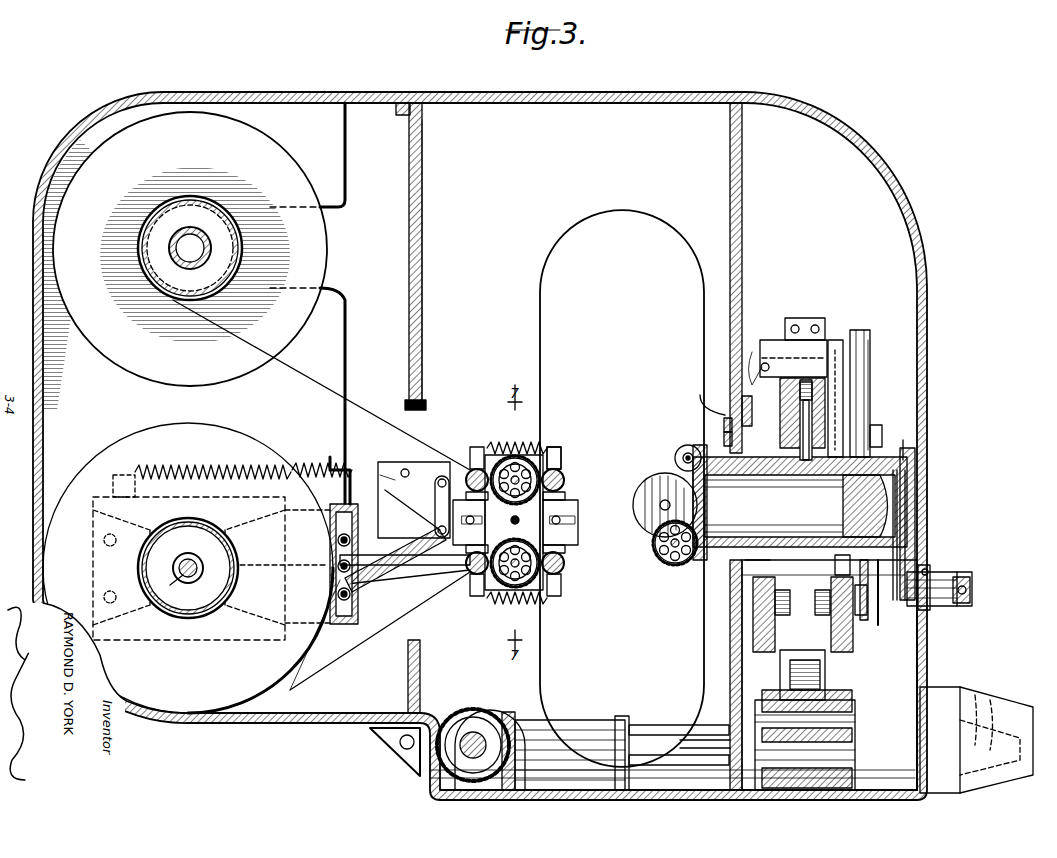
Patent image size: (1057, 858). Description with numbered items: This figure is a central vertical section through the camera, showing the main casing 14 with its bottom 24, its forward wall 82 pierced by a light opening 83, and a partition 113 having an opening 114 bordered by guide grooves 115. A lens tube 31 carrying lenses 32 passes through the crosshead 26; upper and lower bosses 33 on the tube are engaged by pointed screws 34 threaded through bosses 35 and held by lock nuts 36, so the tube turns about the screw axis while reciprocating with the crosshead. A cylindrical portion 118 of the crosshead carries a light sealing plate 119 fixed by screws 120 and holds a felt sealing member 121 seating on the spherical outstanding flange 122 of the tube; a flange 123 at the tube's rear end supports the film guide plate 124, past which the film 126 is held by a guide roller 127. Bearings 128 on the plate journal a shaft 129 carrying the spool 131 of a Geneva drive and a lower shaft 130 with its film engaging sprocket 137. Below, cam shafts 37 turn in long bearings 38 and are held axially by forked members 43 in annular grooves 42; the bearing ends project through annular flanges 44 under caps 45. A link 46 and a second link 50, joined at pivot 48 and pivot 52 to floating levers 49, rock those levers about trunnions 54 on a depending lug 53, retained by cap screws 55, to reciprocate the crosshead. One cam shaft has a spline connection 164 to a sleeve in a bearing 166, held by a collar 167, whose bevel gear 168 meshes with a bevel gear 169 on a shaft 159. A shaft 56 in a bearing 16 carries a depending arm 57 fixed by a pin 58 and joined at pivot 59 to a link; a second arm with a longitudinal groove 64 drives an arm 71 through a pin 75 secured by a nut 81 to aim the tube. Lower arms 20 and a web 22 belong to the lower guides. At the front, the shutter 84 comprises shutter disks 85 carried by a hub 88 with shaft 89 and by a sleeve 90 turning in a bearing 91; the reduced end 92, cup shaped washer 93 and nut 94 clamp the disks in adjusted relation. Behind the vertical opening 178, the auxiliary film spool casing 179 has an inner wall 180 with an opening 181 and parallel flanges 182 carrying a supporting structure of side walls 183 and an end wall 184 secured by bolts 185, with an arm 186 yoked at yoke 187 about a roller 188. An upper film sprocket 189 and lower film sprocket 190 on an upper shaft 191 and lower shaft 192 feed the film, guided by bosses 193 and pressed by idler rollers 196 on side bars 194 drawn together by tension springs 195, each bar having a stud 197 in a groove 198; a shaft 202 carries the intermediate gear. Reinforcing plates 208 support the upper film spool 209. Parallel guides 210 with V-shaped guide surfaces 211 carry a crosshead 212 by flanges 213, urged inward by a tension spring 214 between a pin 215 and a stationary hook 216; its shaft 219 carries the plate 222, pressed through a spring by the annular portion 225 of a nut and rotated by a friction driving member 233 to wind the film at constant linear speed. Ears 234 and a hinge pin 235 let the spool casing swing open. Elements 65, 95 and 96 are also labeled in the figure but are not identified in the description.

The casing 14 is at (860, 148).
The block 16 is at (815, 345).
The piston chamber 20 is at (780, 680).
The piston 22 is at (822, 680).
The drive shaft 24 is at (684, 792).
The bar 26 is at (812, 420).
The cylinder wall 31 is at (820, 480).
The piston 32 is at (712, 500).
The cylinder 33 is at (785, 480).
The stem 34 is at (812, 425).
The body 35 is at (780, 398).
The threaded stem 36 is at (814, 390).
The tube 37 is at (700, 738).
The housing 38 is at (855, 720).
The nozzle tip 42 is at (1005, 730).
The nozzle passage 43 is at (980, 698).
The nozzle 44 is at (925, 687).
The nozzle passage 45 is at (988, 705).
The disc 46 is at (855, 740).
The disc 48 is at (855, 760).
The cylinder 49 is at (753, 640).
The plate 50 is at (852, 700).
The housing 52 is at (740, 710).
The spring 53 is at (775, 620).
The lever 54 is at (843, 575).
The spring 55 is at (753, 600).
The ears 56 is at (778, 318).
The stop 57 is at (742, 400).
The pin 58 is at (756, 362).
The bracket 59 is at (862, 585).
The rod 64 is at (863, 330).
The member 65 is at (930, 470).
The rod 71 is at (870, 360).
The lug 75 is at (882, 446).
The plate 81 is at (915, 425).
The plate 82 is at (910, 386).
The plate 83 is at (915, 515).
The plate 84 is at (900, 500).
The plate 85 is at (920, 530).
The boss 88 is at (920, 640).
The gear 89 is at (930, 565).
The shaft 90 is at (938, 608).
The pin 91 is at (940, 568).
The nut 92 is at (970, 583).
The washer 93 is at (965, 606).
The collar 94 is at (968, 572).
The rod 95 is at (866, 620).
The rod 96 is at (882, 628).
The partition 113 is at (742, 186).
The bracket 114 is at (724, 424).
The arm 115 is at (716, 396).
The block 118 is at (766, 440).
The rod 119 is at (738, 480).
The gear 120 is at (720, 580).
The flange 121 is at (755, 540).
The gear 122 is at (700, 560).
The bracket 123 is at (724, 438).
The gear 124 is at (678, 470).
The opening 126 is at (704, 305).
The pinion 127 is at (676, 450).
The disc 128 is at (660, 495).
The hub 129 is at (658, 545).
The gear 130 is at (655, 560).
The shaft 131 is at (640, 495).
The gear 137 is at (670, 566).
The gear 159 is at (468, 730).
The shaft 164 is at (665, 730).
The sleeve 166 is at (592, 722).
The collar 167 is at (630, 720).
The worm 168 is at (508, 712).
The gear teeth 169 is at (470, 710).
The partition top 178 is at (405, 92).
The casing top 179 is at (290, 92).
The partition 180 is at (424, 190).
The partition face 181 is at (420, 395).
The partition lower 182 is at (425, 450).
The frame 183 is at (560, 495).
The link 184 is at (435, 498).
The pivot 185 is at (438, 484).
The lever 186 is at (386, 562).
The pin 187 is at (410, 505).
The rod 188 is at (390, 574).
The sprocket 189 is at (538, 458).
The sprocket 190 is at (540, 585).
The bracket 191 is at (562, 458).
The frame 192 is at (572, 545).
The frame 193 is at (580, 530).
The bracket 194 is at (560, 580).
The spring 195 is at (500, 444).
The roller 196 is at (468, 468).
The pin 197 is at (590, 500).
The pin 198 is at (580, 513).
The pin 202 is at (526, 520).
The reel hub 208 is at (272, 207).
The reel 209 is at (282, 160).
The film 210 is at (310, 520).
The roller bracket 211 is at (338, 470).
The hub 212 is at (258, 610).
The reel housing 213 is at (255, 470).
The spring 214 is at (326, 465).
The spring 215 is at (150, 470).
The bracket 216 is at (380, 462).
The shaft 219 is at (198, 554).
The film 222 is at (300, 680).
The shaft 225 is at (170, 585).
The rod 233 is at (282, 563).
The tab 234 is at (370, 734).
The pin 235 is at (400, 742).